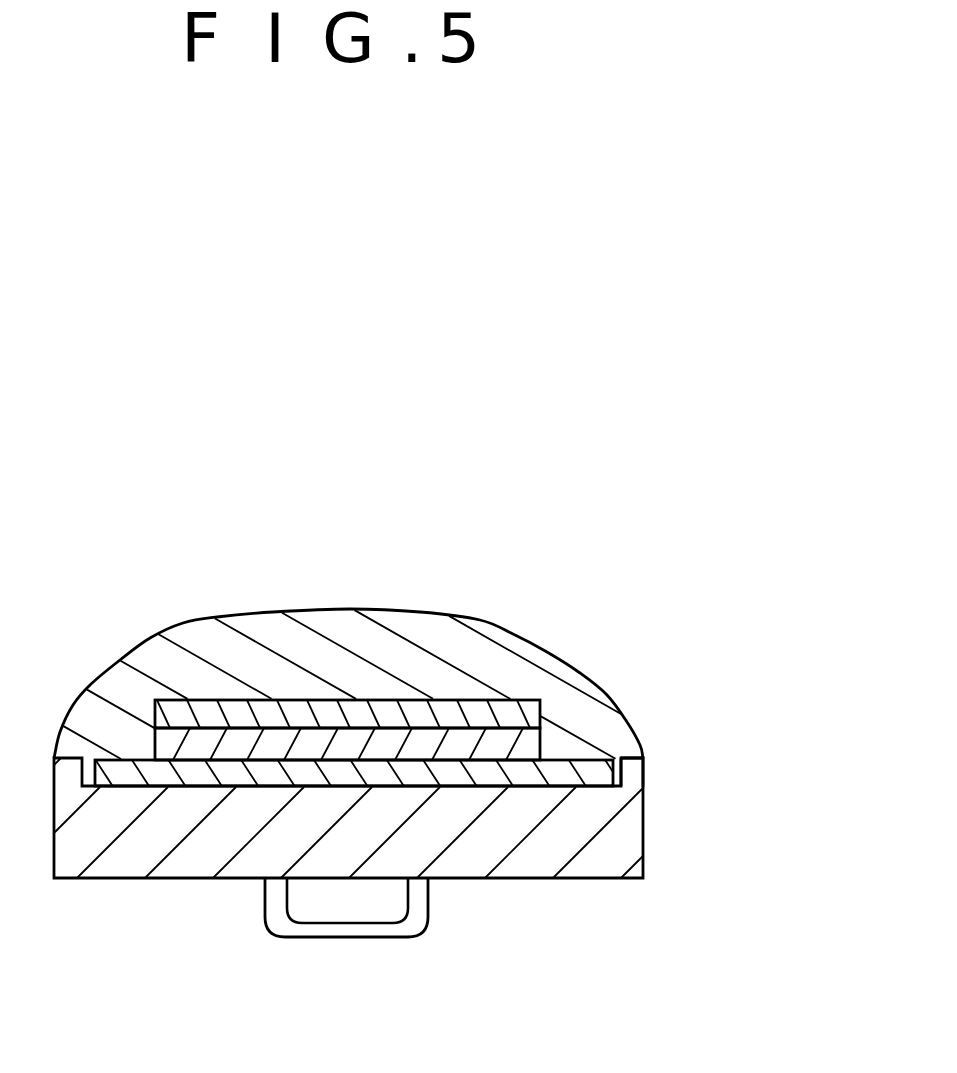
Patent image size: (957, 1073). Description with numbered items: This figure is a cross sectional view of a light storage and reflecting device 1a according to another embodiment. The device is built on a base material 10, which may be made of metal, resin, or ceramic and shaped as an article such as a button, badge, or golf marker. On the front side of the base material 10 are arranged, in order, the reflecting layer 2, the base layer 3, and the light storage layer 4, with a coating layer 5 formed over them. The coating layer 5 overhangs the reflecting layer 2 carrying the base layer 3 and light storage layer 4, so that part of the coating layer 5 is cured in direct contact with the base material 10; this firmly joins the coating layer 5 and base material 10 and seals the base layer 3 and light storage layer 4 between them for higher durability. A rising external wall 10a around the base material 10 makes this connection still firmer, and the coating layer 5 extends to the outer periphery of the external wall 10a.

The light storage and reflecting device 1a is at (555, 592).
The reflecting layer 2 is at (585, 773).
The base layer 3 is at (425, 740).
The light storage layer 4 is at (360, 718).
The coating layer 5 is at (212, 647).
The base material 10 is at (497, 835).
The external wall 10a is at (641, 763).